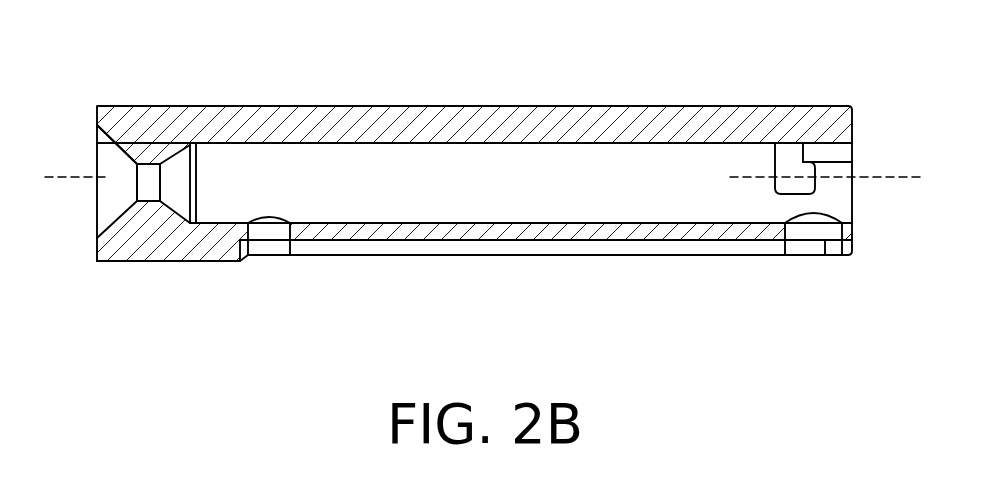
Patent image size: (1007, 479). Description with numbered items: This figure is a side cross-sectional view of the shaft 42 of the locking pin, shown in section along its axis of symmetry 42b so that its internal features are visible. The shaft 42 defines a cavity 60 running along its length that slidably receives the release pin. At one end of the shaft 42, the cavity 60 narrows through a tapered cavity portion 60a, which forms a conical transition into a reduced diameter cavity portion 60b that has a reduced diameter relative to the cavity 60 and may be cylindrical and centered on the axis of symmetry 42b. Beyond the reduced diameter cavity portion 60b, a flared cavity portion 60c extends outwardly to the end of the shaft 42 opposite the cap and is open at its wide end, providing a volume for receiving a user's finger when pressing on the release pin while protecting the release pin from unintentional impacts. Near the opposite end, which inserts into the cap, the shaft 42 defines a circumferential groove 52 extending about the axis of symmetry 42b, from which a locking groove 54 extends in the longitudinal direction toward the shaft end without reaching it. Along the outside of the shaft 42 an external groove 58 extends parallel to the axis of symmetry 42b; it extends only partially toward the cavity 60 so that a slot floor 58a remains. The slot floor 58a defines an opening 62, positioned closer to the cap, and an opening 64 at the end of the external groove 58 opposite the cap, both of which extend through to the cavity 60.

The shaft 42 is at (403, 120).
The axis of symmetry 42b is at (873, 177).
The circumferential groove 52 is at (775, 160).
The locking groove 54 is at (820, 182).
The external groove 58 is at (634, 247).
The slot floor 58a is at (535, 242).
The cavity 60 is at (337, 143).
The tapered cavity portion 60a is at (188, 152).
The reduced diameter cavity portion 60b is at (137, 165).
The flared cavity portion 60c is at (120, 150).
The opening 62 is at (787, 230).
The opening 64 is at (252, 227).